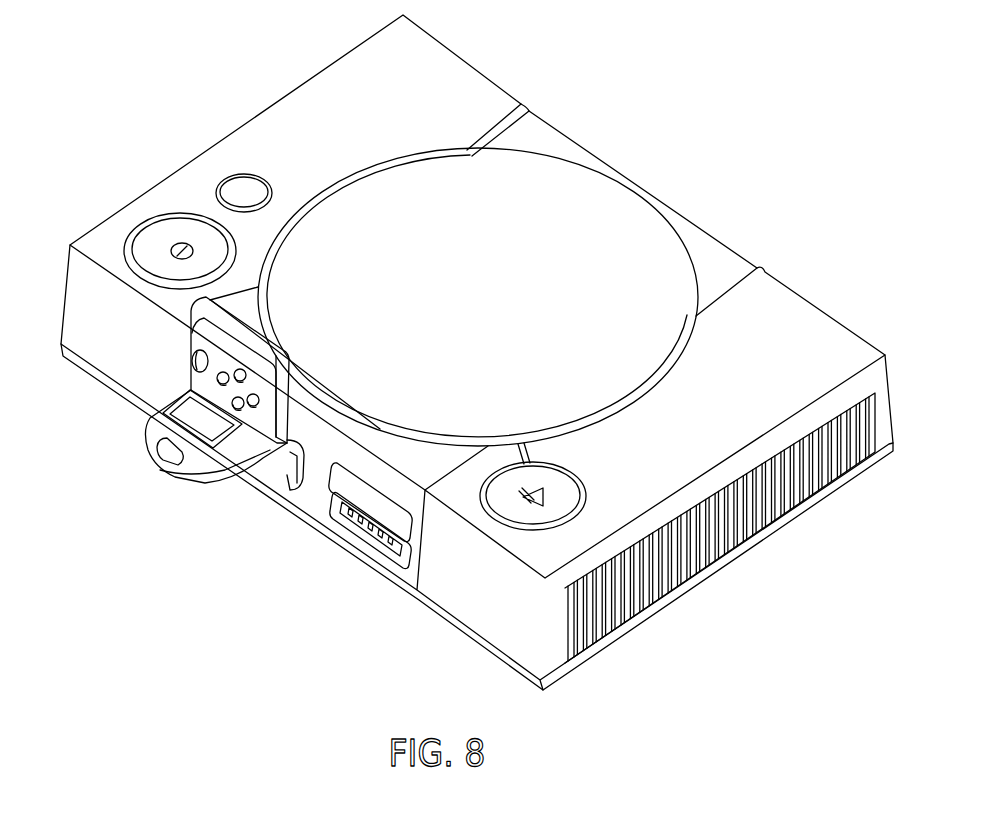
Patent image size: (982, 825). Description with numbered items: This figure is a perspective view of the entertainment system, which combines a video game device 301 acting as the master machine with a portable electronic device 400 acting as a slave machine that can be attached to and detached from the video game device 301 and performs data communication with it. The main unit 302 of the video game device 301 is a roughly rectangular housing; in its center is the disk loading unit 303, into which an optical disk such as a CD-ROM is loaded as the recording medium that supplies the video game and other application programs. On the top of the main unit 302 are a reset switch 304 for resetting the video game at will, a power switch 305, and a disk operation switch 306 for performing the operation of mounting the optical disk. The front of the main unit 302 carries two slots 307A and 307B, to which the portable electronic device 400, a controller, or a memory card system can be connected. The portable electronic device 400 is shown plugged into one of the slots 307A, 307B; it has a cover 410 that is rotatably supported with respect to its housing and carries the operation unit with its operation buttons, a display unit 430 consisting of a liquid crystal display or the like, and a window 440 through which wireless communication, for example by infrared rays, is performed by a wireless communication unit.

The video game device 301 is at (735, 148).
The main unit 302 is at (800, 325).
The disk loading unit 303 is at (593, 200).
The reset switch 304 is at (222, 190).
The power switch 305 is at (150, 238).
The disk operation switch 306 is at (568, 493).
The slot 307A is at (292, 468).
The slot 307B is at (400, 570).
The portable electronic device 400 is at (155, 417).
The cover 410 is at (145, 392).
The display unit 430 is at (227, 440).
The window 440 is at (152, 474).